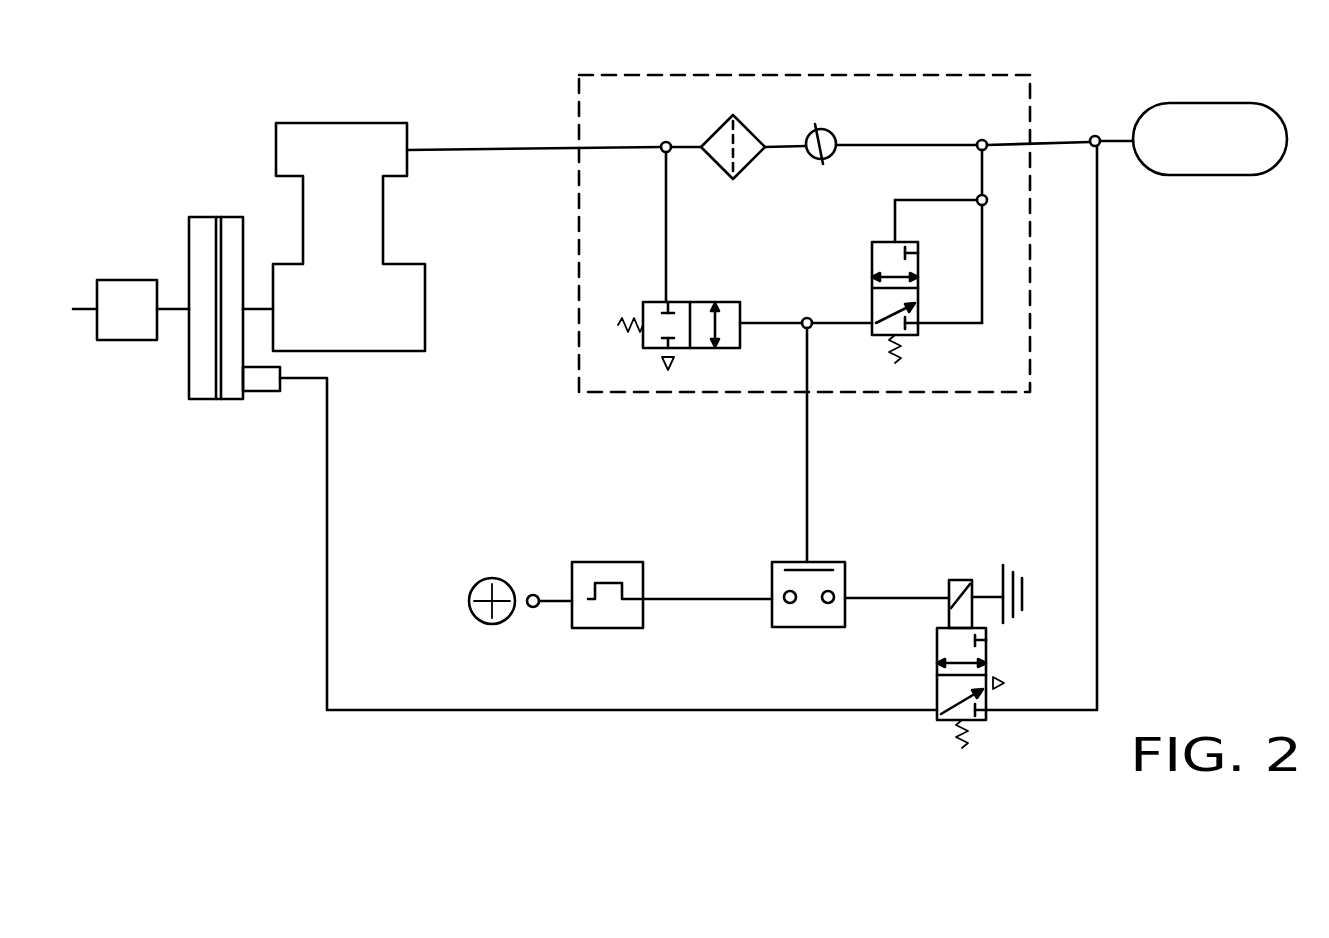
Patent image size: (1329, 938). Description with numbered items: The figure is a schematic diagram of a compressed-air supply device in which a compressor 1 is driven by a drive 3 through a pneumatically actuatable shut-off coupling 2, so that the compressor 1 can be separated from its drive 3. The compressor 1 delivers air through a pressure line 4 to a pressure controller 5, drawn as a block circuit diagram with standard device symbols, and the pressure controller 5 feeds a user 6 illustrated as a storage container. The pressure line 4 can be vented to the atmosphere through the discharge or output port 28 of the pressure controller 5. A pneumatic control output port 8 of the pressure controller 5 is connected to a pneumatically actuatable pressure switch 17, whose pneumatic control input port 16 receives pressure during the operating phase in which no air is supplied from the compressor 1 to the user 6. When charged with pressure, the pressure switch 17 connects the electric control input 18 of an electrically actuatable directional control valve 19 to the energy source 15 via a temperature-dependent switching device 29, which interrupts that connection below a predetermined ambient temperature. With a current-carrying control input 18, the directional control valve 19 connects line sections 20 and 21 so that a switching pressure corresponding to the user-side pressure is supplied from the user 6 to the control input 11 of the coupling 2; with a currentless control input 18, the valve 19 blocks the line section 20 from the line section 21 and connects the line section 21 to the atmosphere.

The compressor 1 is at (312, 134).
The shut-off coupling 2 is at (205, 386).
The drive 3 is at (120, 326).
The pressure line 4 is at (428, 148).
The pressure controller 5 is at (825, 285).
The user 6 is at (1183, 120).
The pneumatic control output port 8 is at (812, 330).
The control input 11 is at (265, 386).
The energy source 15 is at (481, 582).
The pneumatic control input port 16 is at (810, 558).
The pneumatically actuatable pressure switch 17 is at (825, 615).
The electric control input 18 is at (969, 580).
The electrically actuatable directional control valve 19 is at (940, 718).
The line section 20 is at (1098, 435).
The line section 21 is at (327, 548).
The discharge or output port 28 is at (662, 368).
The temperature-dependent switching device 29 is at (620, 575).